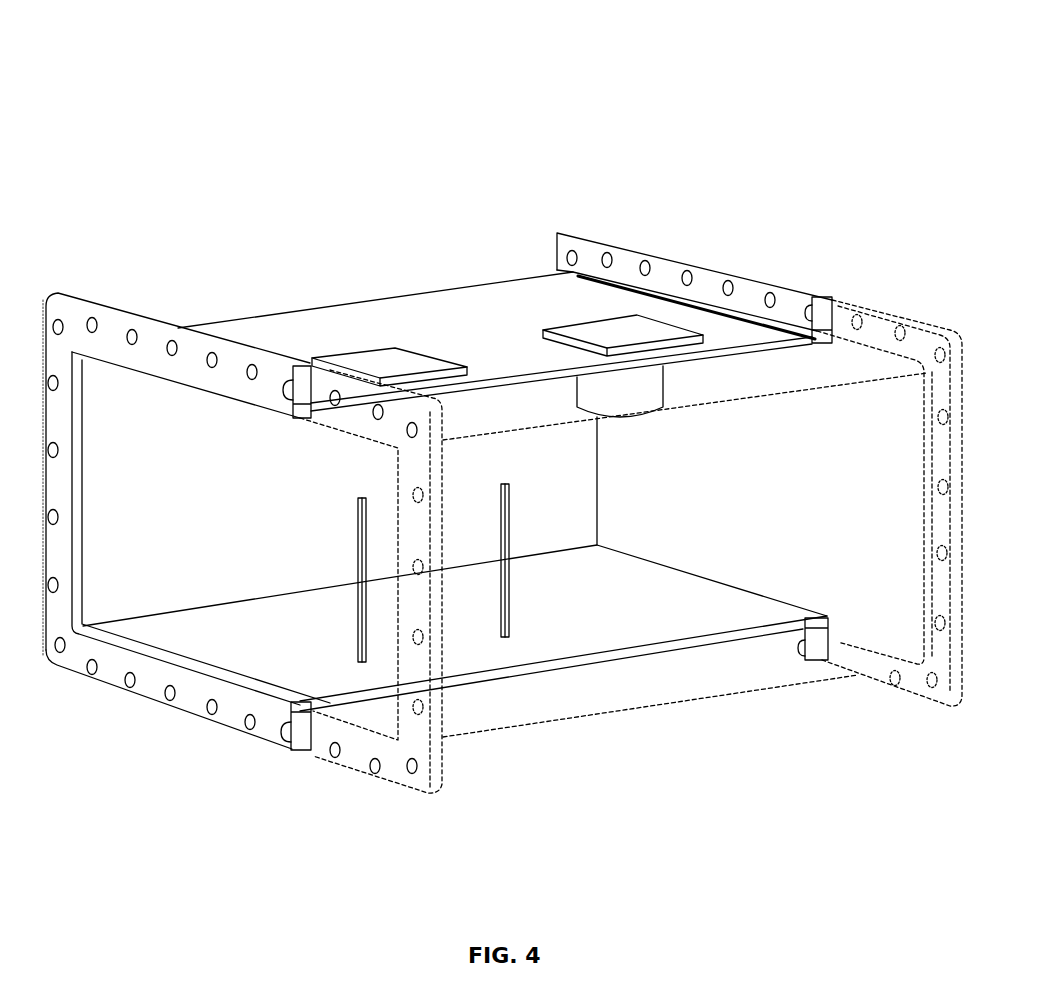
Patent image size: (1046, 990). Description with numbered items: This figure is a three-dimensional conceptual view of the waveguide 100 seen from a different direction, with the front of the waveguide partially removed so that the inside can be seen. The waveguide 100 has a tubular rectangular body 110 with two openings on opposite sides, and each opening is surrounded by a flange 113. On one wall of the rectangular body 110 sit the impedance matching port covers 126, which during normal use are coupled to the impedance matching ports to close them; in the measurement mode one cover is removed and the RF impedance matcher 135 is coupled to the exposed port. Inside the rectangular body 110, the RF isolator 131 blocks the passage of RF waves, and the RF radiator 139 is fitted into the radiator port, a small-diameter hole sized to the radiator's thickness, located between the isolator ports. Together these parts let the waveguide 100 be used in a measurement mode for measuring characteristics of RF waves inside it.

The waveguide 100 is at (485, 48).
The tubular rectangular body 110 is at (283, 240).
The flange 113 is at (110, 328).
The impedance matching port cover 126 is at (380, 362).
The RF isolator 131 is at (365, 655).
The RF impedance matcher 135 is at (613, 335).
The RF radiator 139 is at (508, 603).